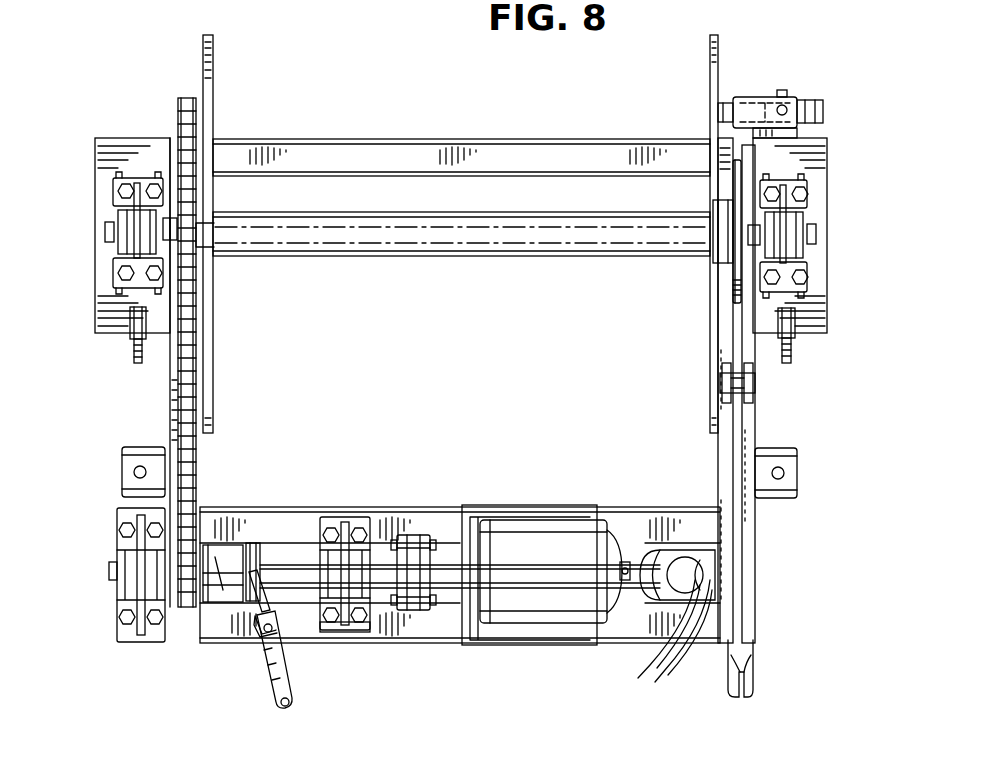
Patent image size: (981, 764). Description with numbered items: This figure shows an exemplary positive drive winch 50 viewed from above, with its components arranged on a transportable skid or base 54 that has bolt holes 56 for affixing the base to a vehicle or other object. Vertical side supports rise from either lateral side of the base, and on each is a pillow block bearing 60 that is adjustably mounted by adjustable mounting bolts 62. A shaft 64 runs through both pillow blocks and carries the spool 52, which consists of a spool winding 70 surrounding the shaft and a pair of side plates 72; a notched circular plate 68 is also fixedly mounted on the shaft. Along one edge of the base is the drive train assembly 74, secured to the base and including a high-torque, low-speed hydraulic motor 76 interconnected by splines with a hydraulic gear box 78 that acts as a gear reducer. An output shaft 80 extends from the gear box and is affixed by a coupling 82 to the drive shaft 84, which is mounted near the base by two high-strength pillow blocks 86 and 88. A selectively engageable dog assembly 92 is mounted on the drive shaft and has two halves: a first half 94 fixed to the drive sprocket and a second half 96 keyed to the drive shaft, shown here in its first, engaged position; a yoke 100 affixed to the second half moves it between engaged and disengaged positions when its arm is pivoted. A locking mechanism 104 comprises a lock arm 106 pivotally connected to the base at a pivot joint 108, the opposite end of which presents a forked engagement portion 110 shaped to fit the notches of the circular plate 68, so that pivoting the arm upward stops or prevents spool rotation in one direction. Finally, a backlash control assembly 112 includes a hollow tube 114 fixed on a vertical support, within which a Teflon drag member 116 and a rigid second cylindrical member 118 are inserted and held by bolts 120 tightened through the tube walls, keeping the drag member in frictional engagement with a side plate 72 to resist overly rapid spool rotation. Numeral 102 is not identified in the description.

The positive drive winch 50 is at (124, 128).
The spool 52 is at (475, 225).
The base 54 is at (378, 144).
The bolt holes 56 is at (138, 472).
The pillow block bearing 60 is at (118, 212).
The adjustable mounting bolts 62 is at (134, 321).
The shaft 64 is at (172, 226).
The notched circular plate 68 is at (740, 171).
The spool winding 70 is at (446, 256).
The side plates 72 is at (216, 48).
The drive train assembly 74 is at (518, 503).
The hydraulic motor 76 is at (632, 560).
The hydraulic gear box 78 is at (555, 571).
The output shaft 80 is at (443, 562).
The coupling 82 is at (408, 534).
The drive shaft 84 is at (295, 565).
The pillow block 86 is at (355, 632).
The pillow block 88 is at (126, 595).
The dog assembly 92 is at (222, 564).
The first half 94 is at (213, 590).
The second half 96 is at (231, 590).
The yoke 100 is at (292, 690).
The drive chain 102 is at (186, 402).
The locking mechanism 104 is at (756, 516).
The lock arm 106 is at (750, 430).
The pivot joint 108 is at (746, 382).
The forked engagement portion 110 is at (746, 670).
The backlash control assembly 112 is at (788, 83).
The hollow tube 114 is at (742, 97).
The drag member 116 is at (718, 106).
The second cylindrical member 118 is at (824, 112).
The bolts 120 is at (786, 108).